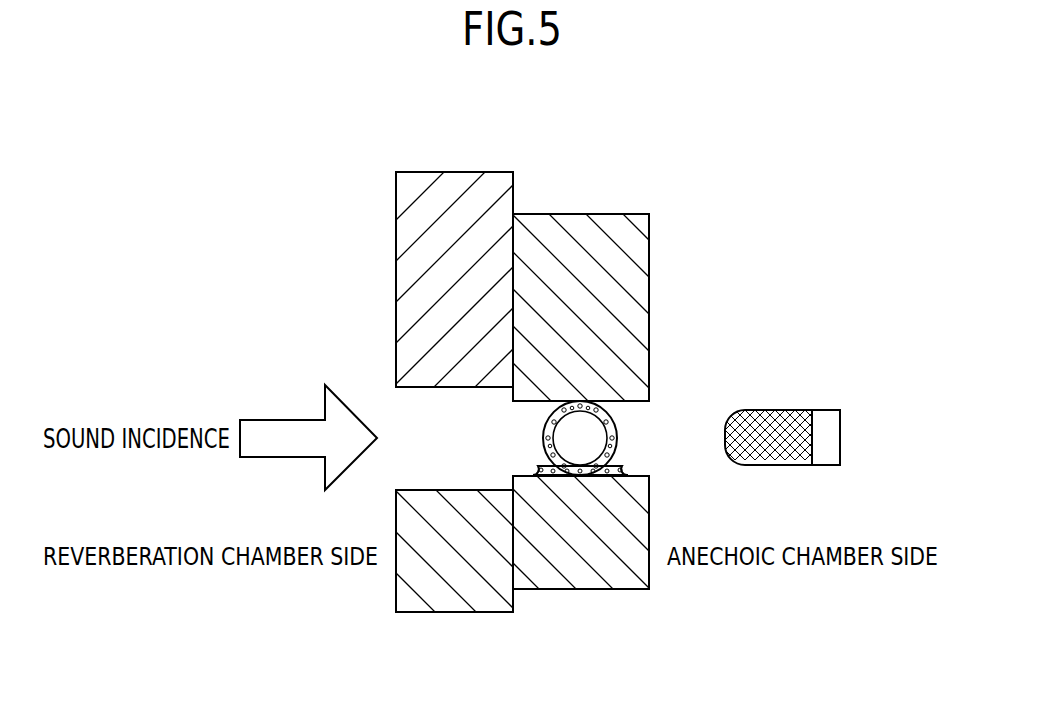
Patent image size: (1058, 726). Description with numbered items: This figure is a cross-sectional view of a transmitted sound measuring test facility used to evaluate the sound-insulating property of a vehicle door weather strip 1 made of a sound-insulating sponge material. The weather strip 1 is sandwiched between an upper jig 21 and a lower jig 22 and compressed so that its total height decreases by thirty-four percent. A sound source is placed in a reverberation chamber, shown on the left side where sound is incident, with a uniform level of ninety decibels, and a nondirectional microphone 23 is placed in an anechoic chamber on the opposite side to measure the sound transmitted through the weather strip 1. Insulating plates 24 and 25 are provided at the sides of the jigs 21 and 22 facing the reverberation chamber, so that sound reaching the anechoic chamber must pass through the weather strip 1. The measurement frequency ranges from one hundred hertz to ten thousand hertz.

The vehicle door weather strip 1 is at (618, 424).
The upper jig 21 is at (592, 222).
The lower jig 22 is at (592, 580).
The nondirectional microphone 23 is at (768, 410).
The insulating plate 24 is at (453, 183).
The insulating plate 25 is at (452, 601).